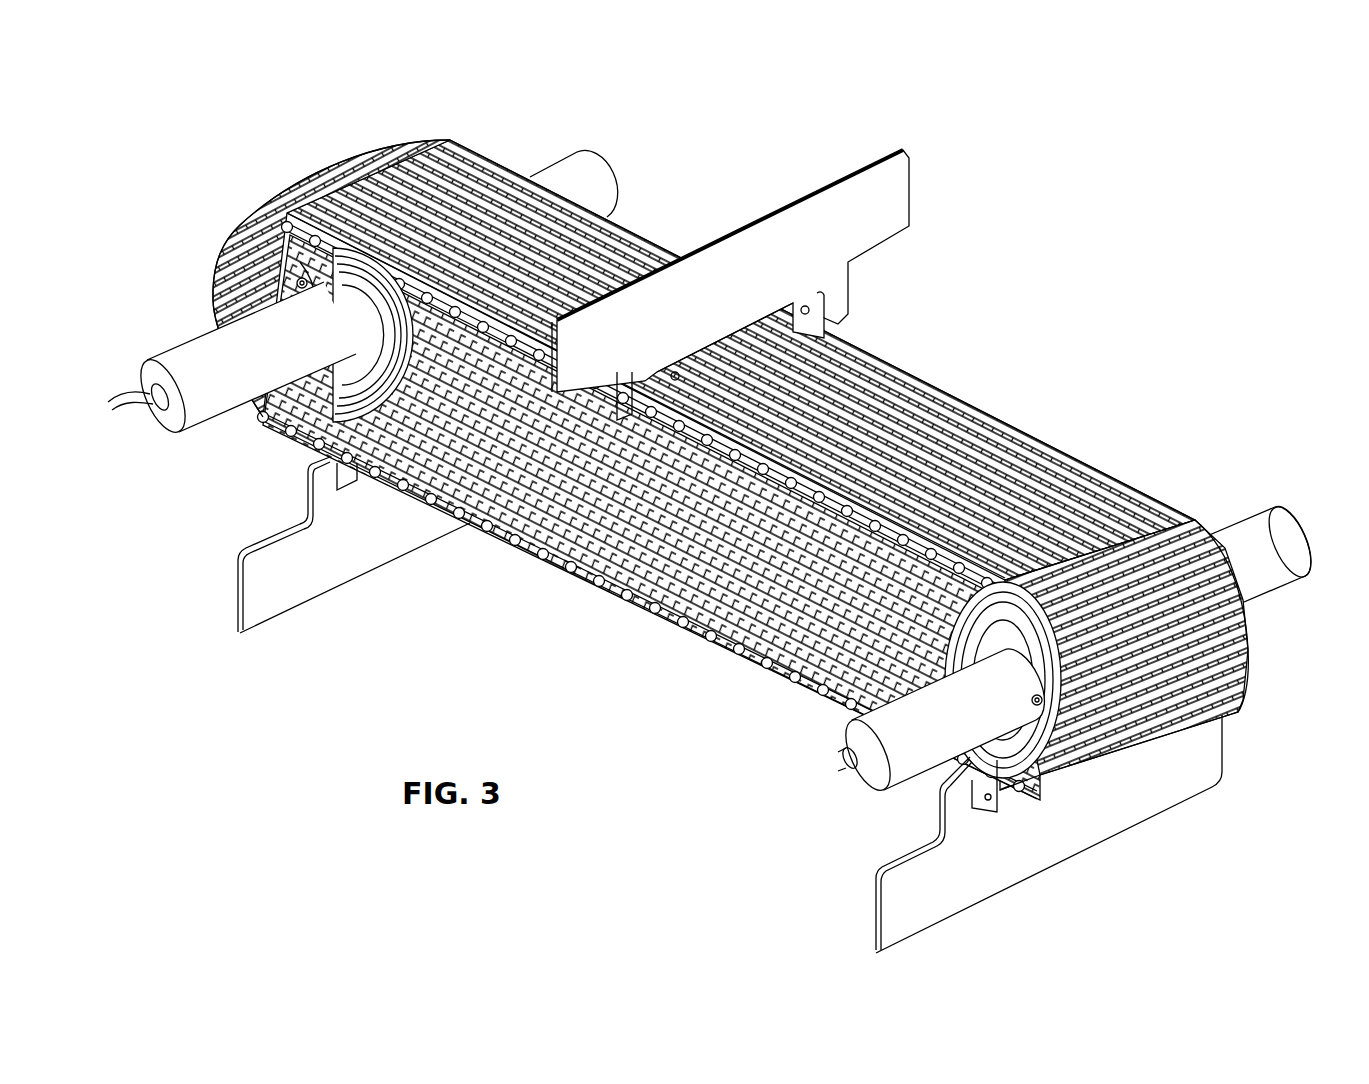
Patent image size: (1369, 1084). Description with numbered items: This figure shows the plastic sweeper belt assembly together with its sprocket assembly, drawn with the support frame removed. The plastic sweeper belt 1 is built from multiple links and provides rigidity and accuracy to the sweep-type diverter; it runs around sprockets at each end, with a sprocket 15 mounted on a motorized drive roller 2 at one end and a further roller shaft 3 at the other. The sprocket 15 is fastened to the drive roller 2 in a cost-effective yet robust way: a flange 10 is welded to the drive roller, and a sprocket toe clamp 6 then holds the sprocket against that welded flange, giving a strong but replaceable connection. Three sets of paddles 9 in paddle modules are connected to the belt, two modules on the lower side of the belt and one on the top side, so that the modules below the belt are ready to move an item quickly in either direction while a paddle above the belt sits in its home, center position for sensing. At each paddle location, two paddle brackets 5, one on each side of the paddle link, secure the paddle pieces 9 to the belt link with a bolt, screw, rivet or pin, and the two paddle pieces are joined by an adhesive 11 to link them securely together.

The plastic sweeper belt 1 is at (456, 142).
The motorized drive roller 2 is at (142, 377).
The shaft 3 is at (1287, 580).
The paddle bracket 5 is at (777, 325).
The sprocket toe clamp 6 is at (295, 272).
The paddle 9 is at (761, 209).
The flange 10 is at (290, 288).
The adhesive 11 is at (730, 181).
The sprocket 15 is at (250, 292).